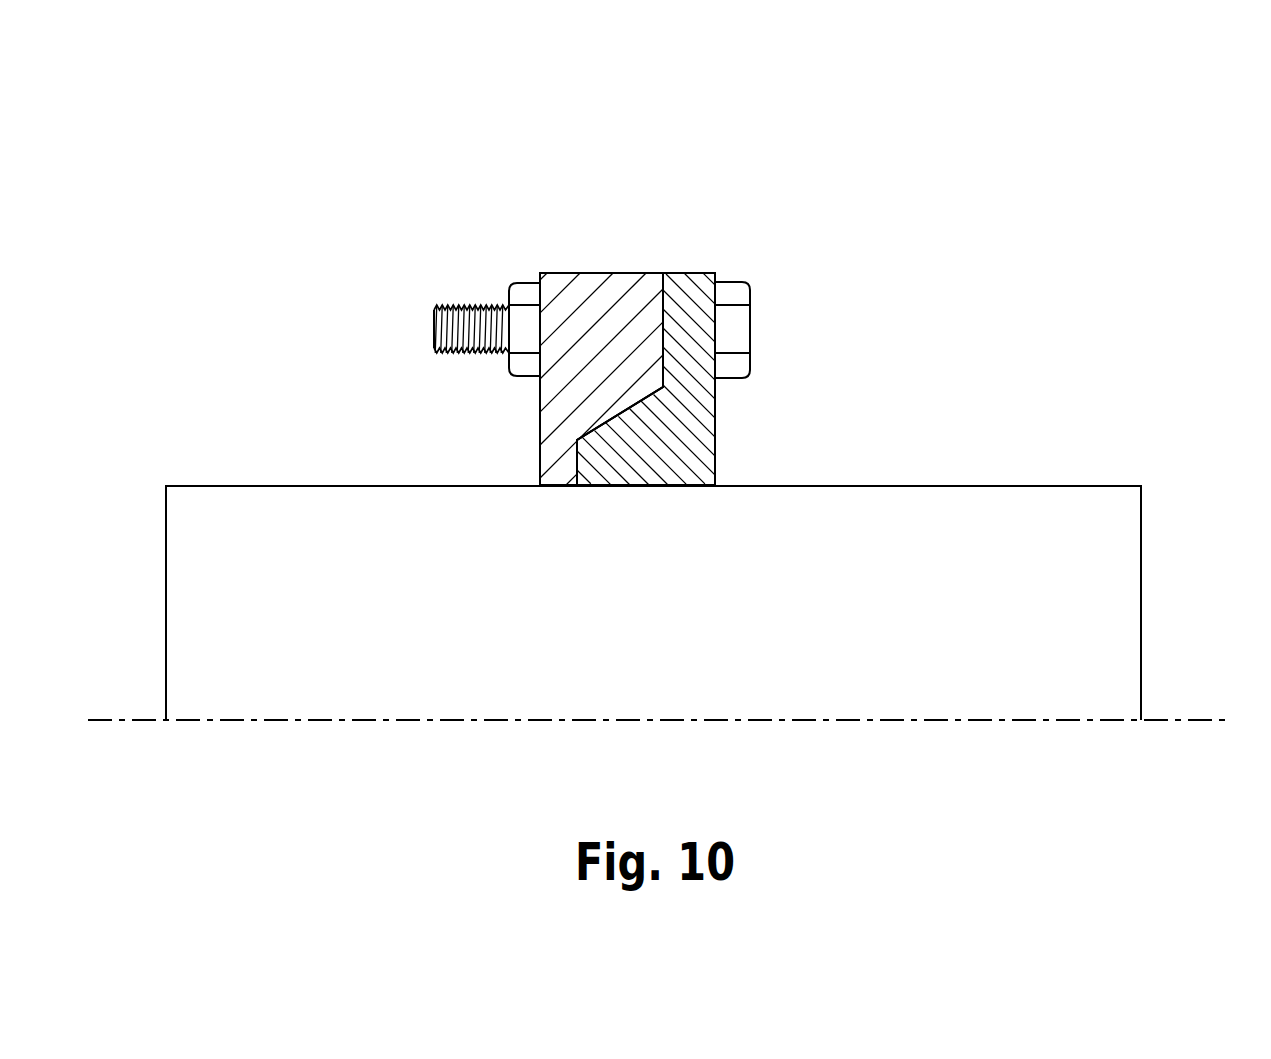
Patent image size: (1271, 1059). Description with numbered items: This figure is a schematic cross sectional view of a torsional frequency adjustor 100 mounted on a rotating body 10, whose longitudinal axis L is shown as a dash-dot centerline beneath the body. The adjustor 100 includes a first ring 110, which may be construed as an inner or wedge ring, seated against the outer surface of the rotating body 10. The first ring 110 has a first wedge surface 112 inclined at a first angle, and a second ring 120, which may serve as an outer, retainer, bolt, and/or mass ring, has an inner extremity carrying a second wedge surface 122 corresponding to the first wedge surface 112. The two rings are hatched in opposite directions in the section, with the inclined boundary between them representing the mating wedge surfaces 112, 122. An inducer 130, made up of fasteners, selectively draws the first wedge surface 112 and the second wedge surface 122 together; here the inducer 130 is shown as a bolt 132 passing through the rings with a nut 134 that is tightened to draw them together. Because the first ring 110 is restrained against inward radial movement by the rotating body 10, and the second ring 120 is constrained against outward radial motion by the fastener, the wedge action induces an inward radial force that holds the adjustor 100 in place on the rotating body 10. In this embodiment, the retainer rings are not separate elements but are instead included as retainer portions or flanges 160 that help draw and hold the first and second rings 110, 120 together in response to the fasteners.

The torsional frequency adjustor 100 is at (1001, 87).
The rotating body 10 is at (662, 688).
The longitudinal axis L is at (1223, 703).
The first ring 110 is at (690, 432).
The first wedge surface 112 is at (630, 405).
The second ring 120 is at (610, 300).
The second wedge surface 122 is at (633, 410).
The inducer 130 is at (790, 255).
The bolt 132 is at (735, 322).
The nut 134 is at (517, 313).
The retainer portion or flange 160 is at (690, 302).